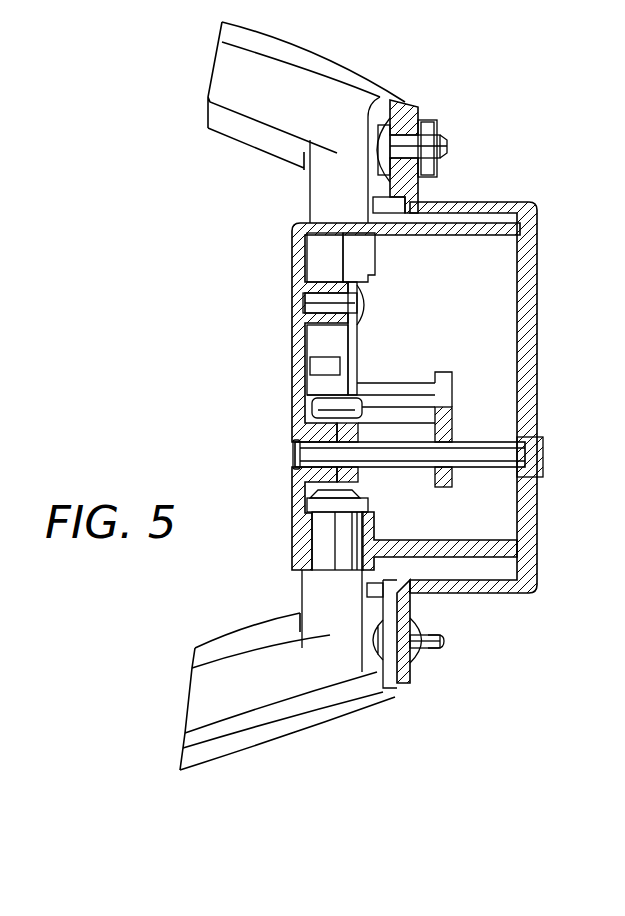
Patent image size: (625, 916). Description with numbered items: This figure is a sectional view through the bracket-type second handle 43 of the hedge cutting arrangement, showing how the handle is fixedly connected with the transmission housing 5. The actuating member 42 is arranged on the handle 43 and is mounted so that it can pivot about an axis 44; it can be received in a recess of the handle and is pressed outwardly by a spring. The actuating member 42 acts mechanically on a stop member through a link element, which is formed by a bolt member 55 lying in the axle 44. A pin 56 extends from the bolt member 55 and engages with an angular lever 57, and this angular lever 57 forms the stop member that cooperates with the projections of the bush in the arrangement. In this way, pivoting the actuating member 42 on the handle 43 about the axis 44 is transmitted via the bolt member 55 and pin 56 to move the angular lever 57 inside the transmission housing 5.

The transmission housing part 5 is at (485, 230).
The actuating member 42 is at (310, 678).
The second handle 43 is at (370, 690).
The axis 44 is at (318, 193).
The bolt member 55 is at (312, 413).
The pin 56 is at (390, 395).
The angular lever 57 is at (451, 490).